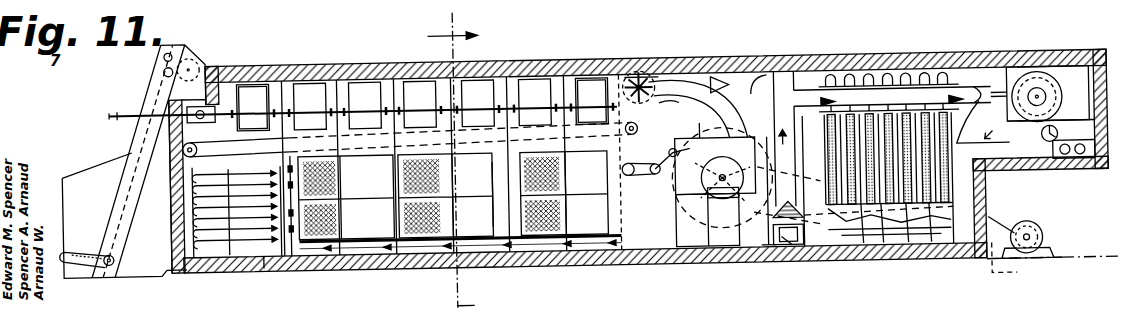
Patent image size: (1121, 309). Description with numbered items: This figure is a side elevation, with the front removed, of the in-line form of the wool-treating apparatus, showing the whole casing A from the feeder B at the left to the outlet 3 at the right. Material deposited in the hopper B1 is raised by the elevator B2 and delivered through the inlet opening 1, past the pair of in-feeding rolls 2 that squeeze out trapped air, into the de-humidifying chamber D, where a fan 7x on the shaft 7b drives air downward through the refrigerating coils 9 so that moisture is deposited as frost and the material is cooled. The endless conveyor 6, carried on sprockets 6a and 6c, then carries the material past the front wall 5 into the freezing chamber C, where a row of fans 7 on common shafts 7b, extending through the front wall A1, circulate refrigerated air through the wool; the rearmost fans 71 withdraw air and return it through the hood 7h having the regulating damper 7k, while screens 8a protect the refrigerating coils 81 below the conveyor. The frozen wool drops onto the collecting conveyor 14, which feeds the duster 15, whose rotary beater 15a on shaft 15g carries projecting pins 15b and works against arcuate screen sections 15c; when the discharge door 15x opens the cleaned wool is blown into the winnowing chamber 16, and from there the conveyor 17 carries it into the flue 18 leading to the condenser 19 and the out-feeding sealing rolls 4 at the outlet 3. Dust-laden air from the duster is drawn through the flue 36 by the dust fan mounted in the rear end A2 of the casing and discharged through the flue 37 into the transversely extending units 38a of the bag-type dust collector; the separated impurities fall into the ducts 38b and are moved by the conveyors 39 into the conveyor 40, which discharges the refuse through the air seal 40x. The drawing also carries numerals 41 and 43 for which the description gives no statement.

The inlet opening 1 is at (190, 97).
The in-feeding rolls 2 is at (192, 135).
The outlet 3 is at (1080, 170).
The out-feeding sealing rolls 4 is at (1072, 140).
The front wall of the freezing chamber 5 is at (276, 98).
The conveyor 6 is at (244, 150).
The sprockets 6a is at (196, 152).
The sprockets 6c is at (650, 108).
The fans 7 is at (313, 97).
The fan 7x is at (250, 92).
The shaft 7b is at (110, 105).
The rearmost fans 71 is at (590, 88).
The regulating damper 7k is at (640, 90).
The hood 7h is at (652, 86).
The screens 8a is at (584, 220).
The pipes or coils 81 is at (478, 170).
The refrigerating coils 9 is at (232, 240).
The collecting conveyor 14 is at (646, 163).
The duster 15 is at (675, 200).
The rotary beater 15a is at (700, 96).
The projecting pins 15b is at (708, 112).
The arcuate screen sections 15c is at (755, 150).
The beater shaft 15g is at (698, 160).
The discharge door 15x is at (724, 214).
The winnowing chamber 16 is at (797, 172).
The conveyor 17 is at (792, 250).
The flue 18 is at (783, 88).
The condenser 19 is at (1060, 78).
The flue 36 is at (648, 84).
The flue 37 is at (958, 148).
The dust collector units 38a is at (900, 95).
The ducts 38b is at (902, 252).
The conveyors 39 is at (838, 252).
The conveyor 40 is at (975, 262).
The air seal 40x is at (1010, 278).
The discharge 41 is at (758, 252).
The bottom conveyor 43 is at (553, 256).
The casing A is at (688, 62).
The front wall of casing A1 is at (170, 212).
The rear end of casing A2 is at (1035, 62).
The feeder B is at (150, 186).
The hopper B1 is at (84, 208).
The elevator B2 is at (140, 178).
The freezing chamber C is at (302, 240).
The de-humidifying chamber D is at (264, 252).